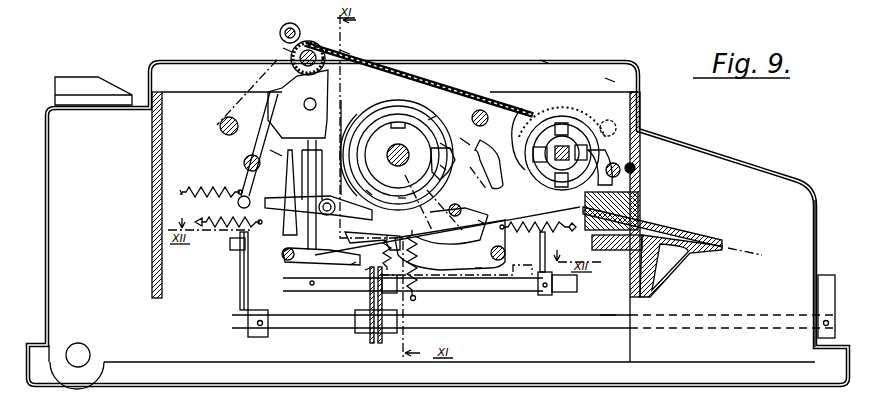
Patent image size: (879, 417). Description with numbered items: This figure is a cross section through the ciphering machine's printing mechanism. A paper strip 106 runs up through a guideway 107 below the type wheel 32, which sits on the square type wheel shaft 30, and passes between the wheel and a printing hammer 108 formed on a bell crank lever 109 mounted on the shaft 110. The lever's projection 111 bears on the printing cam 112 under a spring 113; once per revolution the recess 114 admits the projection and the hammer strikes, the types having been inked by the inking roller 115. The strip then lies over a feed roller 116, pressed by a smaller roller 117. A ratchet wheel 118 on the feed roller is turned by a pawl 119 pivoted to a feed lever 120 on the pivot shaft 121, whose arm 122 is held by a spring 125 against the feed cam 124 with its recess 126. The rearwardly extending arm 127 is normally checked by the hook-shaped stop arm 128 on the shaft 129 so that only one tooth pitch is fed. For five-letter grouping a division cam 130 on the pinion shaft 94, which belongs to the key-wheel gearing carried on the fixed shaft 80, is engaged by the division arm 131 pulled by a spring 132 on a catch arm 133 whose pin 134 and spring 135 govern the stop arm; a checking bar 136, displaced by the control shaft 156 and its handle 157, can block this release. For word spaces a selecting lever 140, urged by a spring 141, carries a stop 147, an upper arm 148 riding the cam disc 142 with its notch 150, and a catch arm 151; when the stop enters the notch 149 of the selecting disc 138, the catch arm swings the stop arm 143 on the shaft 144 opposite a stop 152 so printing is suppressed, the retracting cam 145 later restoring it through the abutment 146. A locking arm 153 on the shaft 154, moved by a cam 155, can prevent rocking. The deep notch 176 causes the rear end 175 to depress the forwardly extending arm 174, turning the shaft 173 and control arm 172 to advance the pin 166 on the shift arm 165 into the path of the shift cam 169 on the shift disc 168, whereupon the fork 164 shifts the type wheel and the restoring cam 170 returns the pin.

The type wheel shaft 30 is at (590, 113).
The type wheel 32 is at (545, 60).
The fixed shaft 80 is at (220, 126).
The pinion shaft 94 is at (305, 99).
The paper strip 106 is at (728, 245).
The guideway 107 is at (652, 232).
The printing hammer 108 is at (518, 108).
The bell crank lever 109 is at (478, 270).
The shaft 110 is at (500, 260).
The projection 111 is at (368, 192).
The printing cam 112 is at (403, 107).
The spring 113 is at (535, 230).
The recess 114 is at (478, 110).
The inking roller 115 is at (615, 121).
The feed roller 116 is at (283, 50).
The smaller roller 117 is at (280, 33).
The ratchet wheel 118 is at (311, 42).
The pawl 119 is at (345, 52).
The feed lever 120 is at (356, 218).
The pivot shaft 121 is at (458, 215).
The arm 122 is at (432, 118).
The feed cam 124 is at (422, 117).
The spring 125 is at (505, 185).
The recess 126 is at (428, 156).
The rearwardly extending arm 127 is at (272, 198).
The stop arm 128 is at (240, 182).
The shaft 129 is at (244, 163).
The division cam 130 is at (300, 58).
The division arm 131 is at (282, 138).
The spring 132 is at (194, 195).
The catch arm 133 is at (233, 190).
The pin 134 is at (238, 203).
The spring 135 is at (240, 233).
The checking bar 136 is at (238, 250).
The selecting disc 138 is at (605, 150).
The selecting lever 140 is at (482, 222).
The spring 141 is at (370, 290).
The cam disc 142 is at (392, 122).
The stop arm 143 is at (483, 150).
The shaft 144 is at (465, 140).
The retracting cam 145 is at (440, 168).
The abutment 146 is at (461, 208).
The stop 147 is at (620, 190).
The upper arm 148 is at (453, 150).
The notch 149 is at (548, 104).
The notch 150 is at (394, 114).
The catch arm 151 is at (530, 118).
The stop 152 is at (402, 197).
The locking arm 153 is at (384, 290).
The shaft 154 is at (560, 292).
The cam 155 is at (610, 80).
The control shaft 156 is at (608, 318).
The handle 157 is at (826, 273).
The fork 164 is at (546, 250).
The shift arm 165 is at (308, 217).
The pin 166 is at (230, 92).
The shift disc 168 is at (352, 120).
The shift cam 169 is at (342, 118).
The restoring cam 170 is at (391, 148).
The control arm 172 is at (277, 152).
The shaft 173 is at (286, 262).
The forwardly extending arm 174 is at (350, 265).
The rear end 175 is at (365, 270).
The deep notch 176 is at (573, 105).